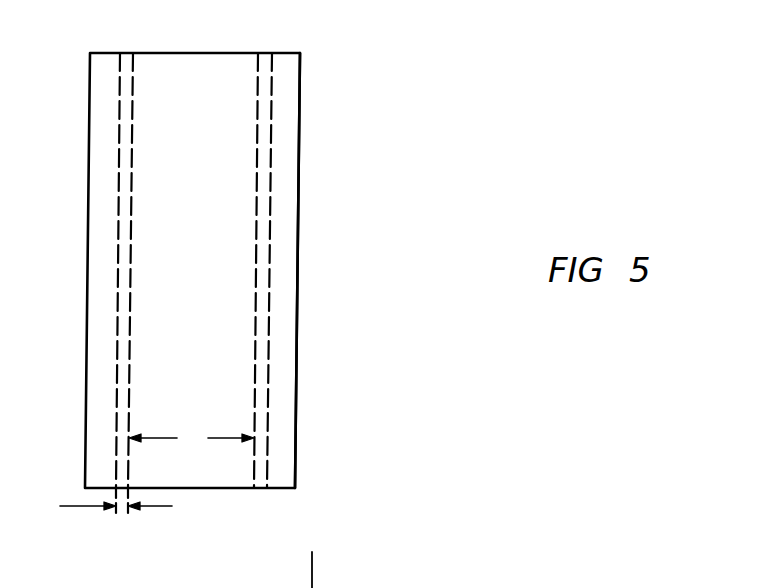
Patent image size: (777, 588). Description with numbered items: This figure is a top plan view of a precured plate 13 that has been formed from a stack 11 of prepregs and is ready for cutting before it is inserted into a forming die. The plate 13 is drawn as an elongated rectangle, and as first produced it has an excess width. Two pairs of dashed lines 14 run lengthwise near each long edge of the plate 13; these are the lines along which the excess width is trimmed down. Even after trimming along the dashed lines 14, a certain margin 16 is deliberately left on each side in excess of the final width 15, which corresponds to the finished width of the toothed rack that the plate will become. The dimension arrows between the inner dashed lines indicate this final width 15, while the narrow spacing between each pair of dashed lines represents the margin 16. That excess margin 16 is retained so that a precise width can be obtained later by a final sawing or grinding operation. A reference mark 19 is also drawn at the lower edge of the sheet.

The stack 11 is at (358, 83).
The precured plate 13 is at (288, 389).
The dashed lines 14 is at (117, 458).
The final width 15 is at (198, 440).
The margin 16 is at (263, 65).
The reference line 19 is at (312, 565).